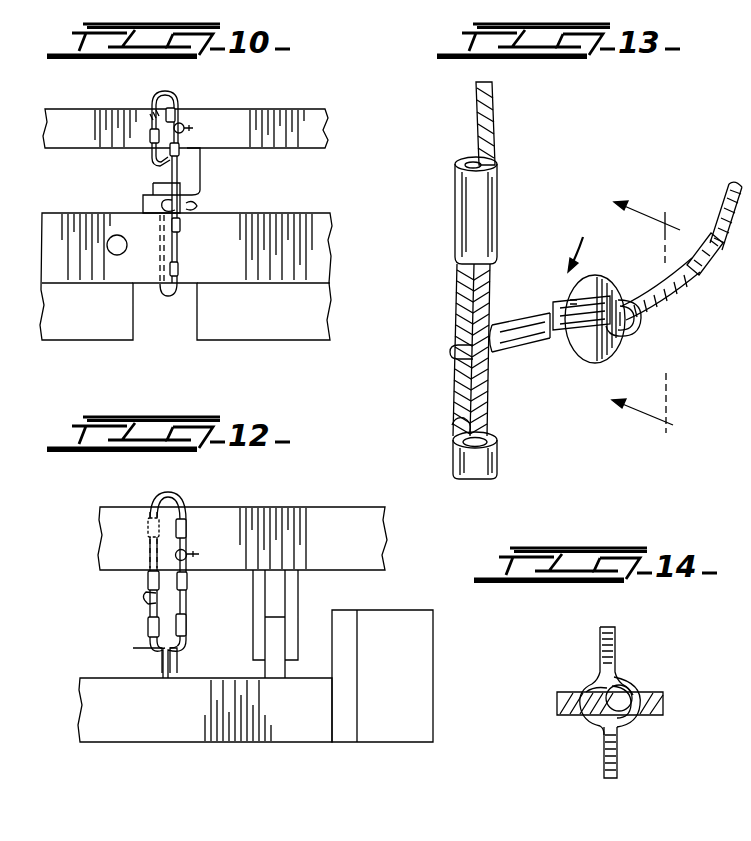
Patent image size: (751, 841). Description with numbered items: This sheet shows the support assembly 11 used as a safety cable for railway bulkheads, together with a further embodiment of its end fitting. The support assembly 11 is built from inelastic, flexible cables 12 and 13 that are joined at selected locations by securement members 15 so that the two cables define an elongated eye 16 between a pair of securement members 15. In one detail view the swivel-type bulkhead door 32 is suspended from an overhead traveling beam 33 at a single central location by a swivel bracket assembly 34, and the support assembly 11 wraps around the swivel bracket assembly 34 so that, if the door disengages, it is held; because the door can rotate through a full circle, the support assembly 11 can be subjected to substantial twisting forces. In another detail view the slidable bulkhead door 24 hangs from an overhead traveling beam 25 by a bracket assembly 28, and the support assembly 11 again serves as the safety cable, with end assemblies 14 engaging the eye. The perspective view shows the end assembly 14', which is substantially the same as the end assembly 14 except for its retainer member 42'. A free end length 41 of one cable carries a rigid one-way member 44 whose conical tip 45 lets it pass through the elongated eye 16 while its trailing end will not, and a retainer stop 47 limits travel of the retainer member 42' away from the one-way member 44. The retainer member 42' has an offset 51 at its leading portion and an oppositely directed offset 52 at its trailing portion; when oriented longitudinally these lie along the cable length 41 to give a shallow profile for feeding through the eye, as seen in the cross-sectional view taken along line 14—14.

In FIG. 10, the support assembly 11 is at (148, 166).
In FIG. 12, the support assembly 11 is at (150, 637).
In FIG. 13, the cable 12 is at (480, 427).
In FIG. 13, the cable 13 is at (460, 426).
In FIG. 10, the end assembly 14 is at (218, 145).
In FIG. 12, the end assembly 14 is at (156, 542).
In FIG. 13, the end assembly 14 is at (656, 323).
In FIG. 13, the end assembly 14' is at (583, 243).
In FIG. 13, the securement member 15 is at (461, 216).
In FIG. 13, the elongated eye 16 is at (473, 297).
In FIG. 12, the bulkhead door 24 is at (151, 717).
In FIG. 12, the overhead traveling beam 25 is at (358, 549).
In FIG. 12, the bracket assembly 28 is at (253, 638).
In FIG. 10, the bulkhead door 32 is at (272, 313).
In FIG. 10, the overhead traveling beam 33 is at (248, 140).
In FIG. 10, the swivel bracket assembly 34 is at (190, 186).
In FIG. 13, the free end length 41 is at (678, 296).
In FIG. 14, the free end length 41 is at (558, 700).
In FIG. 13, the retainer member 42' is at (595, 336).
In FIG. 14, the retainer member 42' is at (633, 698).
In FIG. 13, the one-way member 44 is at (540, 340).
In FIG. 13, the conical tip 45 is at (458, 346).
In FIG. 13, the retainer stop 47 is at (718, 256).
In FIG. 13, the offset 51 is at (634, 334).
In FIG. 14, the offset 51 is at (618, 702).
In FIG. 13, the offset 52 is at (562, 300).
In FIG. 14, the offset 52 is at (593, 682).